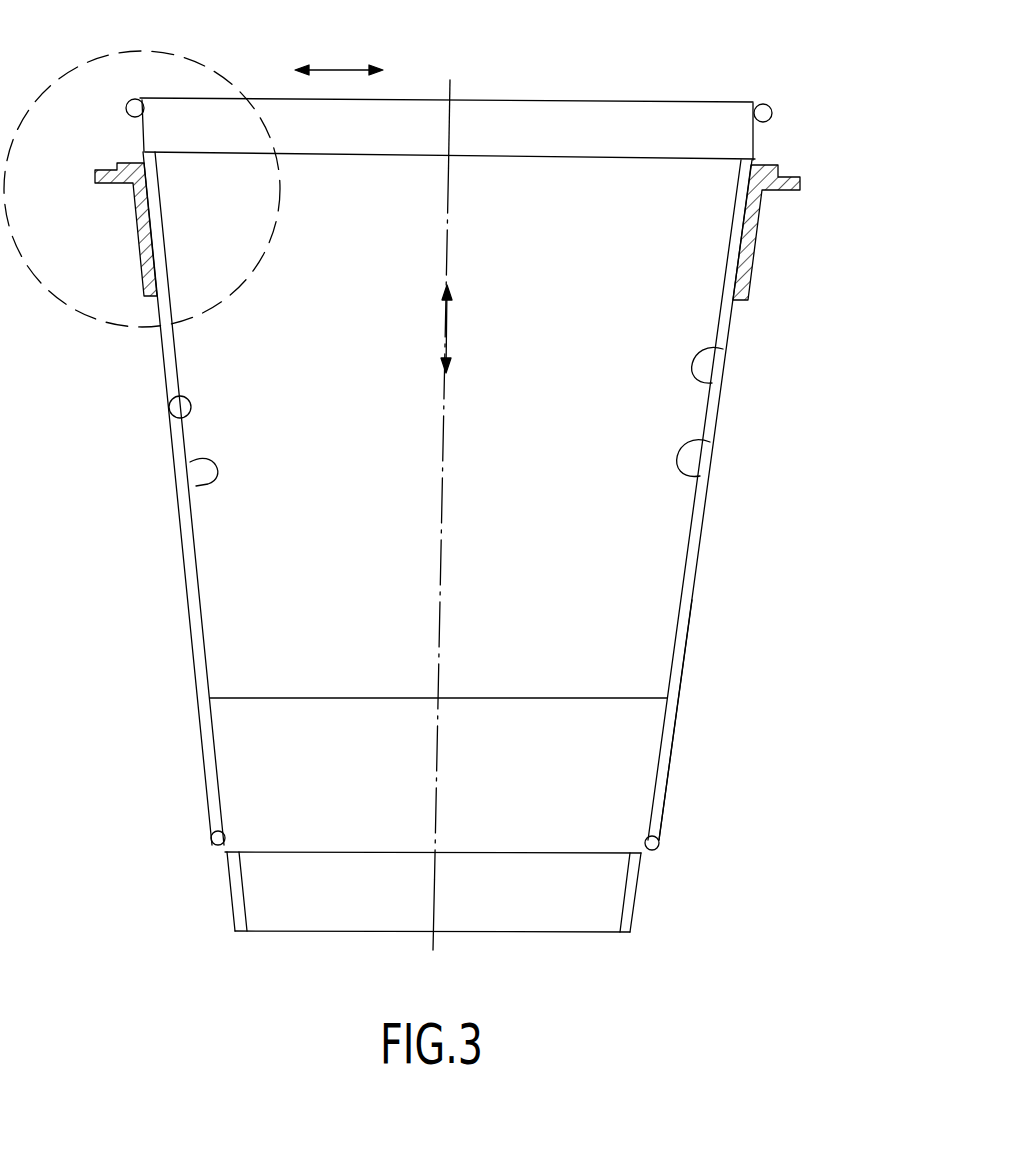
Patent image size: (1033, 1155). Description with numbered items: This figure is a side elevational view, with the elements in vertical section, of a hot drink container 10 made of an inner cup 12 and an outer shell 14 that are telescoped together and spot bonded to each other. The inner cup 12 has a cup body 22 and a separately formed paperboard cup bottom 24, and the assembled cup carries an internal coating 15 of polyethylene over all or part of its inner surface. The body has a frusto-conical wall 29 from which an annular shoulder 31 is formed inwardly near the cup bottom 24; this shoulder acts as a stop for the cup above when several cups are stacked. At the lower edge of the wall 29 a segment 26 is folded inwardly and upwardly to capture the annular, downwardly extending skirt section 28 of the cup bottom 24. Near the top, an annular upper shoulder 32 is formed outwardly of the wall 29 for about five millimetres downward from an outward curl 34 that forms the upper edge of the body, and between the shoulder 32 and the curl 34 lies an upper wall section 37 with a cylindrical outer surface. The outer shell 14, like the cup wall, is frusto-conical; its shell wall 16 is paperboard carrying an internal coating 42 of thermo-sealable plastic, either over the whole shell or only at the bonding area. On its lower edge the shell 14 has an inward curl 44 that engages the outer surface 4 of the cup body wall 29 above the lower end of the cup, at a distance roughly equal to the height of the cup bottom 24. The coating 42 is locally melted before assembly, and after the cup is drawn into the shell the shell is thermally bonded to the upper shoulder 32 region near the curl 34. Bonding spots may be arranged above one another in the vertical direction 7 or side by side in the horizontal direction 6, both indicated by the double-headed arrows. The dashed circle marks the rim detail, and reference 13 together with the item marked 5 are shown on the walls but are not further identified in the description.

The outer surface 4 is at (722, 406).
The connection element 5 is at (169, 400).
The horizontal direction 6 is at (343, 69).
The direction 7 is at (448, 320).
The hot drink container 10 is at (497, 506).
The inner cup 12 is at (537, 118).
The inner wall layer 13 is at (697, 509).
The outer shell 14 is at (150, 343).
The internal coating 15 is at (722, 350).
The shell wall 16 is at (686, 655).
The cup body 22 is at (706, 446).
The cup bottom 24 is at (535, 853).
The segment 26 is at (298, 912).
The skirt section 28 is at (240, 877).
The frusto-conical wall 29 is at (190, 572).
The annular shoulder 31 is at (213, 697).
The annular upper shoulder 32 is at (668, 117).
The outward curl 34 is at (768, 100).
The upper wall section 37 is at (757, 142).
The internal coating 42 is at (185, 467).
The inward curl 44 is at (211, 839).